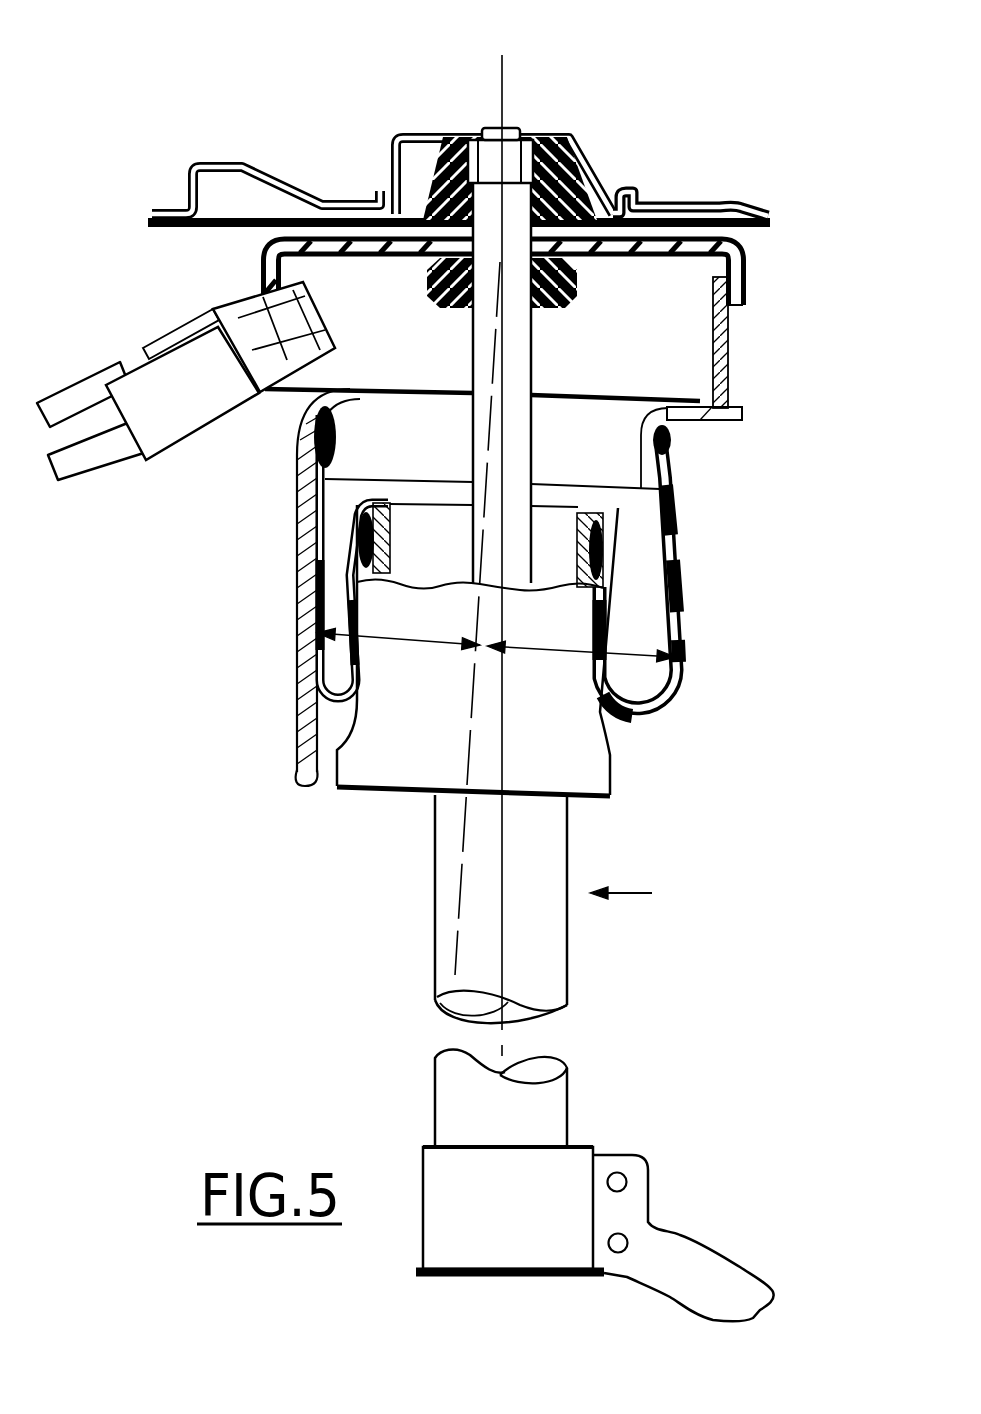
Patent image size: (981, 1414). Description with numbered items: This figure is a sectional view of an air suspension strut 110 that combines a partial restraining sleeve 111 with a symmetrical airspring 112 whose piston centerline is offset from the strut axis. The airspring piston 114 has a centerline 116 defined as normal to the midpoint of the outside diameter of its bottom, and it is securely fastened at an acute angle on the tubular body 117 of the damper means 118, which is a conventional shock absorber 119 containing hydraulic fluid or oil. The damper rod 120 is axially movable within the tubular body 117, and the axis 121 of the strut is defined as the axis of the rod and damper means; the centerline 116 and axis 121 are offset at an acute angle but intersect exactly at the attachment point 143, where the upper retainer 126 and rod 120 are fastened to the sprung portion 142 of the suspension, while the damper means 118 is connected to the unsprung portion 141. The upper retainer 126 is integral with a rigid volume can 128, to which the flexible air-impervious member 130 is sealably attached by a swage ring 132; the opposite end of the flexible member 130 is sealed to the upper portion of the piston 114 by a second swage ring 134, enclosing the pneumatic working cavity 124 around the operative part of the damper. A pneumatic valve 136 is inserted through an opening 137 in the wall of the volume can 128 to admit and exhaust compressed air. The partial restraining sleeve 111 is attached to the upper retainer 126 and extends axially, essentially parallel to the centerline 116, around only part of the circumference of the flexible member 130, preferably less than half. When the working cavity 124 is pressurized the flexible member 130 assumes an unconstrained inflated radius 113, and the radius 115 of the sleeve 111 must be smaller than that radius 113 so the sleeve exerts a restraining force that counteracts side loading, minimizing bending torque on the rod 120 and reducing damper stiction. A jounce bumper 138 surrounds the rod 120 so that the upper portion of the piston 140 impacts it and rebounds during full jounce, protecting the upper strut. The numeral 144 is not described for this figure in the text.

The air suspension strut 110 is at (733, 90).
The partial restraining sleeve 111 is at (297, 713).
The symmetrical airspring 112 is at (713, 524).
The unconstrained inflated radius 113 is at (527, 647).
The piston 114 is at (597, 777).
The radius of the partial restraining sleeve 115 is at (433, 643).
The centerline of the piston 116 is at (460, 887).
The tubular body 117 is at (570, 837).
The damper means 118 is at (644, 894).
The shock absorber 119 is at (553, 991).
The damper rod 120 is at (517, 370).
The axis of the strut 121 is at (504, 75).
The working cavity 124 is at (697, 372).
The upper retainer 126 is at (733, 250).
The volume can 128 is at (270, 239).
The flexible member 130 is at (680, 597).
The swage ring 132 is at (657, 470).
The swage ring 134 is at (350, 540).
The pneumatic valve 136 is at (167, 433).
The opening 137 is at (268, 290).
The jounce bumper 138 is at (577, 288).
The upper portion of the piston 140 is at (430, 512).
The unsprung portion 141 is at (649, 1236).
The sprung portion 142 is at (238, 166).
The attachment point 143 is at (607, 203).
The cap 144 is at (553, 180).